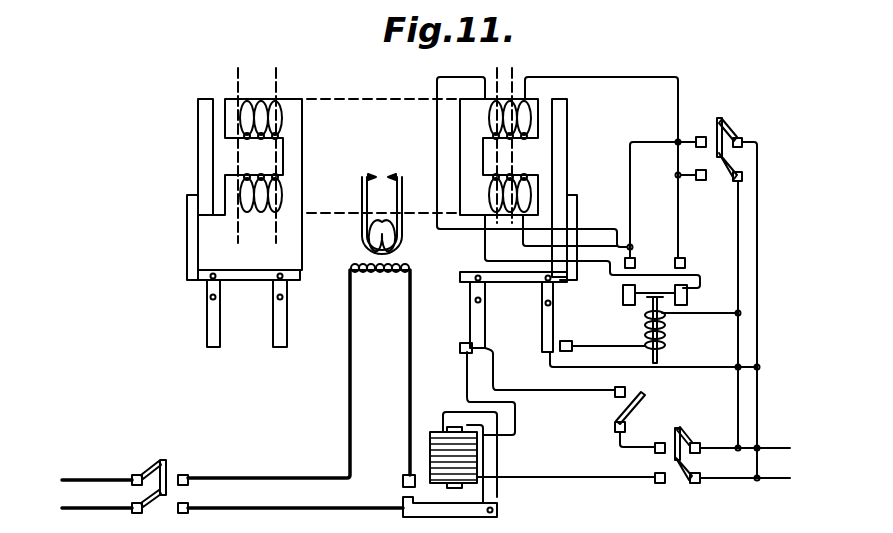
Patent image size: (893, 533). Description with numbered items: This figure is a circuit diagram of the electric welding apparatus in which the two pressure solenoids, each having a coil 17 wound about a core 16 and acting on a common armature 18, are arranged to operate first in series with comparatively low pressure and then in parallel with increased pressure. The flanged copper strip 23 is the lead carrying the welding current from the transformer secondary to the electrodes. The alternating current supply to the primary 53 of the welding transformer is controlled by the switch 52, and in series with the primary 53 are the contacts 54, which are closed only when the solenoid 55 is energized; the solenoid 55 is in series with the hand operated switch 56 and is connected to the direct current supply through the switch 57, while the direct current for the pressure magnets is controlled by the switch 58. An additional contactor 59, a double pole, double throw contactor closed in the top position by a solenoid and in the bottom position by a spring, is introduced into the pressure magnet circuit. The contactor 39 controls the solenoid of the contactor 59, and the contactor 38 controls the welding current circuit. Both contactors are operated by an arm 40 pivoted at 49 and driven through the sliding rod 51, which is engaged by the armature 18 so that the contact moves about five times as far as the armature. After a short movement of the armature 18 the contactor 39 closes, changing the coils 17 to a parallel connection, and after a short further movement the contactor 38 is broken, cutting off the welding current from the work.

The core 16 is at (529, 130).
The solenoid coil 17 is at (243, 108).
The armature 18 is at (198, 148).
The flanged copper strip 23 is at (362, 193).
The contactor 38 is at (465, 343).
The contactor 39 is at (569, 320).
The arm 40 is at (547, 326).
The pivot 49 is at (543, 304).
The rod 51 is at (512, 281).
The switch 52 is at (167, 462).
The primary 53 is at (378, 276).
The contacts 54 is at (403, 500).
The solenoid 55 is at (432, 432).
The hand operated switch 56 is at (646, 400).
The switch 57 is at (690, 437).
The switch 58 is at (729, 128).
The contactor 59 is at (680, 324).